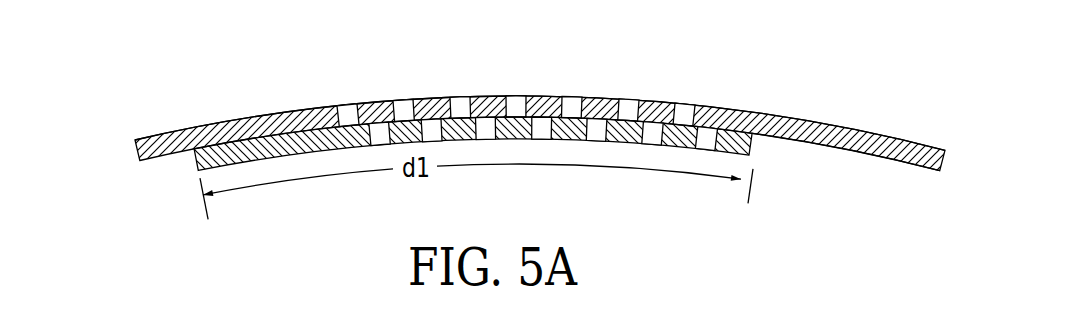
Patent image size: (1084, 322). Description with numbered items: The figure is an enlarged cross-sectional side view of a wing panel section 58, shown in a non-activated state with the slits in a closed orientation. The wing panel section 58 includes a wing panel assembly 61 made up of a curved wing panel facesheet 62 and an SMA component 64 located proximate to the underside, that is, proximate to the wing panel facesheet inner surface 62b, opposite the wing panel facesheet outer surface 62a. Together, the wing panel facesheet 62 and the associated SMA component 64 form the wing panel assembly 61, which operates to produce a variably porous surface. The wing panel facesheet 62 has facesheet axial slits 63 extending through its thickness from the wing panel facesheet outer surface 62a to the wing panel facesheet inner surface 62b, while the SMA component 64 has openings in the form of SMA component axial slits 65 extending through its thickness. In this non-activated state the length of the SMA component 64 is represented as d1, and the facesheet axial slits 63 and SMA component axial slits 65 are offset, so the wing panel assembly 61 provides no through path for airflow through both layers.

The wing panel section 58 is at (233, 80).
The wing panel assembly 61 is at (118, 140).
The wing panel facesheet 62 is at (759, 112).
The wing panel facesheet outer surface 62a is at (908, 140).
The wing panel facesheet inner surface 62b is at (917, 165).
The facesheet axial slits 63 is at (634, 108).
The SMA component 64 is at (753, 148).
The SMA component axial slits 65 is at (598, 133).